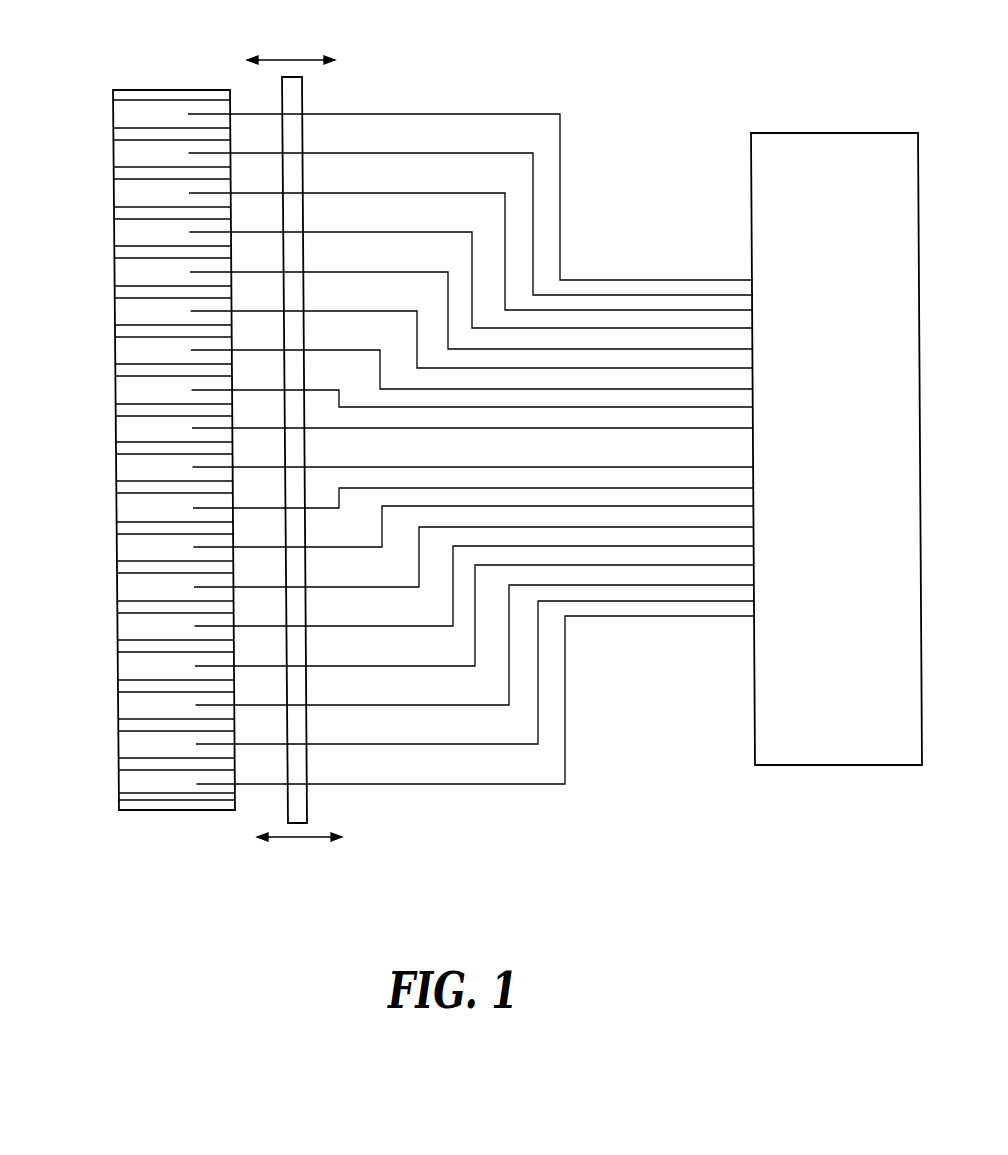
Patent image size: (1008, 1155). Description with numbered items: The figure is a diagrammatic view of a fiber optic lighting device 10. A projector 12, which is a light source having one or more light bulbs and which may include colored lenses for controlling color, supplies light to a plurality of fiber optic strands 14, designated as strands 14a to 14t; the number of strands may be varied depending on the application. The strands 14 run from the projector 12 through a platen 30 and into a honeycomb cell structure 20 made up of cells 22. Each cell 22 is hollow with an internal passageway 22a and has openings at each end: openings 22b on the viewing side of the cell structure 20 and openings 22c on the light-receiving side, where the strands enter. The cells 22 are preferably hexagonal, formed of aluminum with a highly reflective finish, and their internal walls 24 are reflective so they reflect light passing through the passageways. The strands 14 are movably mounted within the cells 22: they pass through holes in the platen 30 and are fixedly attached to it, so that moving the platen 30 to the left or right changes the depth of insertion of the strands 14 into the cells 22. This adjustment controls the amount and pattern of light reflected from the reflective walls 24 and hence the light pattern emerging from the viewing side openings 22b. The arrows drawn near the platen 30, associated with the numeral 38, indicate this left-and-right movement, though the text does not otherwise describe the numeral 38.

The fiber optic lighting device 10 is at (623, 153).
The projector 12 is at (790, 128).
The fiber optic strands 14 is at (574, 278).
The fiber optic strand 14a is at (619, 276).
The fiber optic strand 14t is at (599, 619).
The honeycomb cell structure 20 is at (190, 88).
The cells 22 is at (143, 116).
The internal passageways 22a is at (130, 468).
The openings 22b is at (133, 389).
The openings 22c is at (225, 793).
The internal walls 24 is at (156, 533).
The platen 30 is at (310, 92).
The bar motion arrow 38 is at (308, 852).